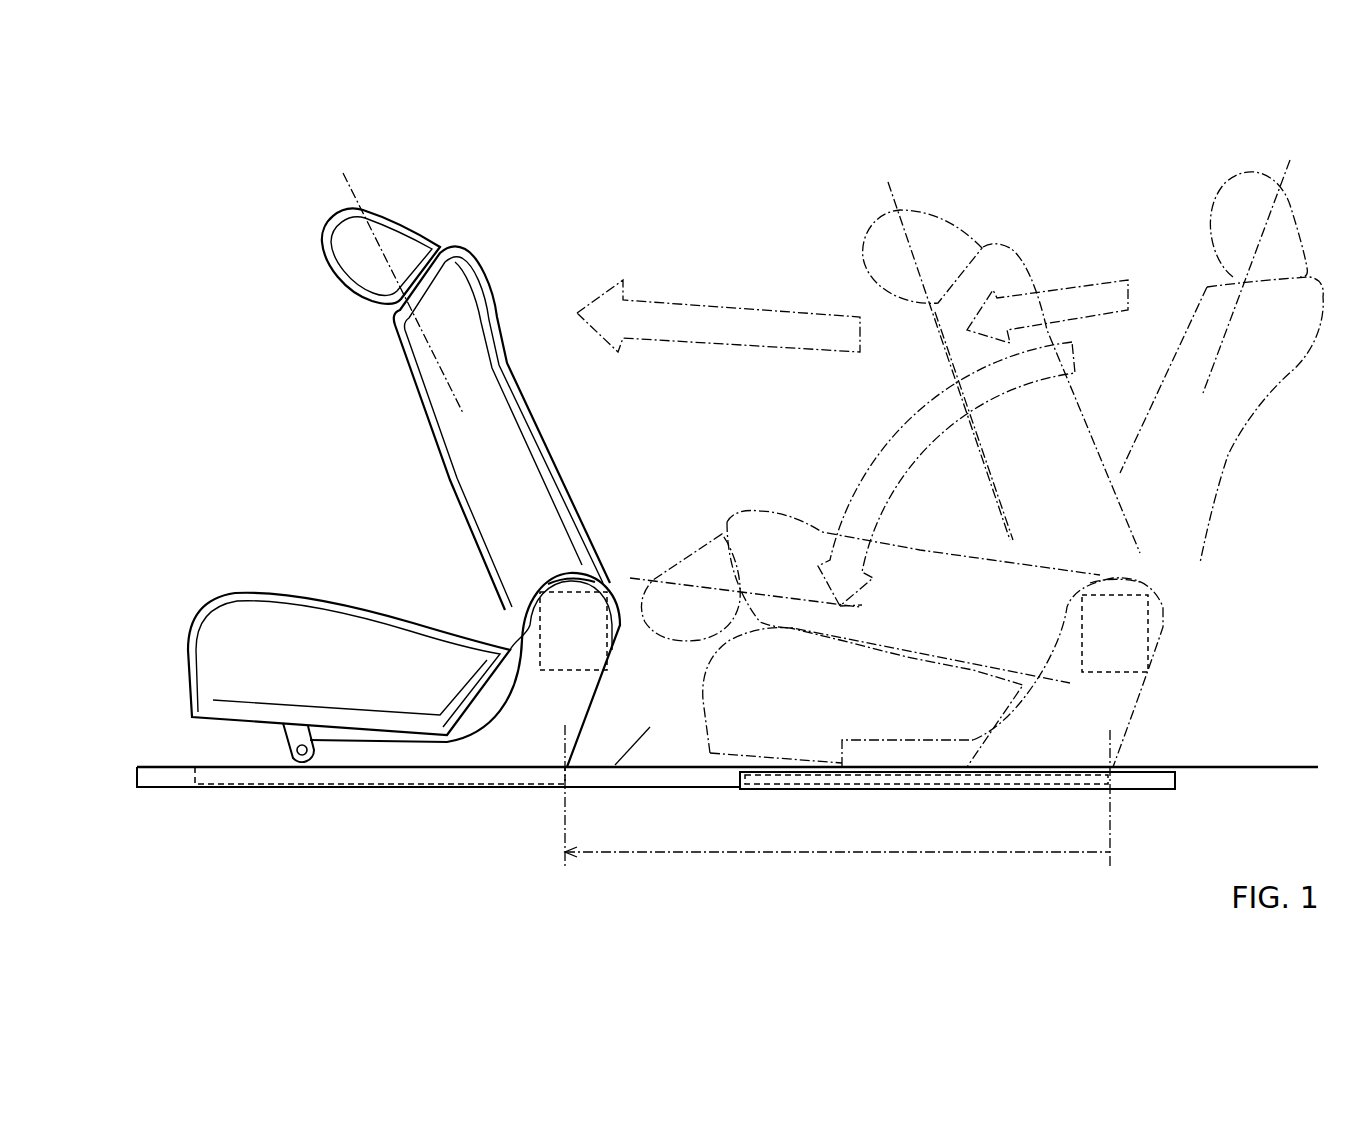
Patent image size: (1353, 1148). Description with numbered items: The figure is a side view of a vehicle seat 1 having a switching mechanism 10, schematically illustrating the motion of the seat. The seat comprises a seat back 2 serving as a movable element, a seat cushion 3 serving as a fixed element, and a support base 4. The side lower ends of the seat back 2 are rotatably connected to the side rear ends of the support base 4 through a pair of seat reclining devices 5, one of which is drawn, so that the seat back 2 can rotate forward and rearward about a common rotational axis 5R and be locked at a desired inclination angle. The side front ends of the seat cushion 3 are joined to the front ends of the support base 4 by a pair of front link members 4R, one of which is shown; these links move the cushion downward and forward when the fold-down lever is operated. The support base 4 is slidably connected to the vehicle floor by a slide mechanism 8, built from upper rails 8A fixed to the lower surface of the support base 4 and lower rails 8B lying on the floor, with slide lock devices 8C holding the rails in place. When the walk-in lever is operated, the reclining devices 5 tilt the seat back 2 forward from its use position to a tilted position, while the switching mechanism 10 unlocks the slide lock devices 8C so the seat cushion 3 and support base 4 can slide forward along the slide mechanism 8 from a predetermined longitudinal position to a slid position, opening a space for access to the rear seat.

The vehicle seat 1 is at (755, 449).
The seat back 2 is at (478, 435).
The seat cushion 3 is at (273, 627).
The support base 4 is at (555, 690).
The front link member 4R is at (292, 731).
The seat reclining device 5 is at (882, 598).
The rotational axis 5R is at (570, 627).
The slide mechanism 8 is at (721, 776).
The upper rail 8A is at (323, 772).
The lower rail 8B is at (643, 777).
The slide lock device 8C is at (651, 816).
The switching mechanism 10 is at (598, 572).